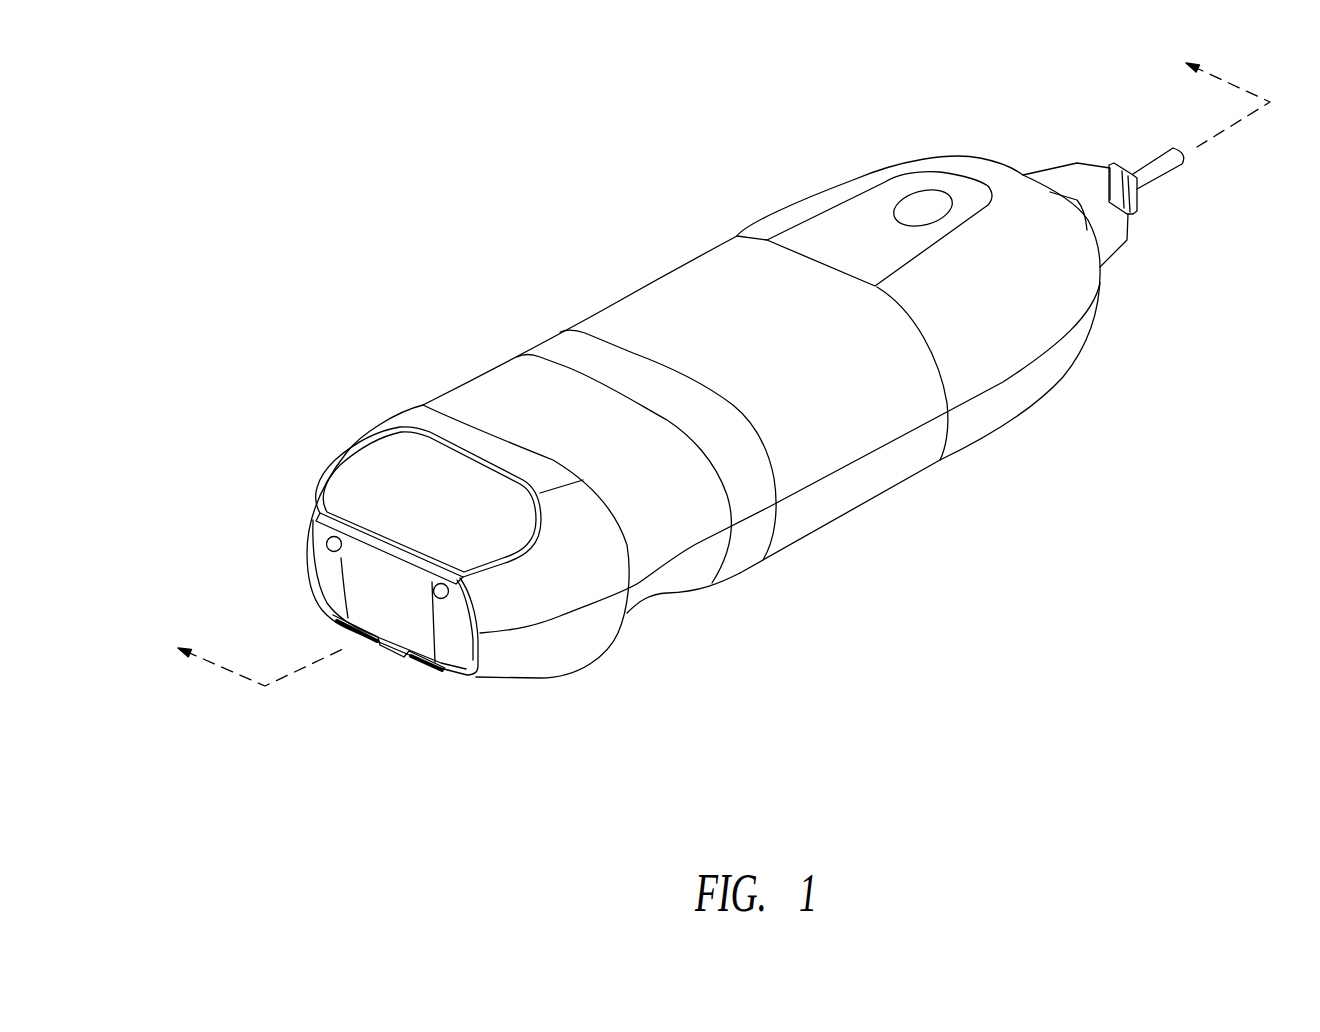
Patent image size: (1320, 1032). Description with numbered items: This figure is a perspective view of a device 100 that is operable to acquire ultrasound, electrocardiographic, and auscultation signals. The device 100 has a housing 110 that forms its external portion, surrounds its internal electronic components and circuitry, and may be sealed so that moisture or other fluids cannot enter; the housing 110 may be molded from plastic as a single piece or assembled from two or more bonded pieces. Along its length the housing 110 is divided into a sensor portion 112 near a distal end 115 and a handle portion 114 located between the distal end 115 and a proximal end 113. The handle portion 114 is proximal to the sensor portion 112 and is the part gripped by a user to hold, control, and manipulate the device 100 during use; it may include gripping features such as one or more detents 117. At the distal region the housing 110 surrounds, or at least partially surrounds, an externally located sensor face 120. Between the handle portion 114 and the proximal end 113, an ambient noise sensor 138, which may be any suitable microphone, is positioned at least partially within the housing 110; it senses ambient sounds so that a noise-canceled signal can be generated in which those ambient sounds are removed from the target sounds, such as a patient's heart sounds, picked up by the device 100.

The device 100 is at (698, 392).
The housing 110 is at (900, 413).
The sensor portion 112 is at (383, 372).
The proximal end 113 is at (1023, 176).
The handle portion 114 is at (720, 190).
The distal end 115 is at (478, 634).
The detents 117 is at (660, 520).
The sensor face 120 is at (333, 578).
The ambient noise sensor 138 is at (902, 182).